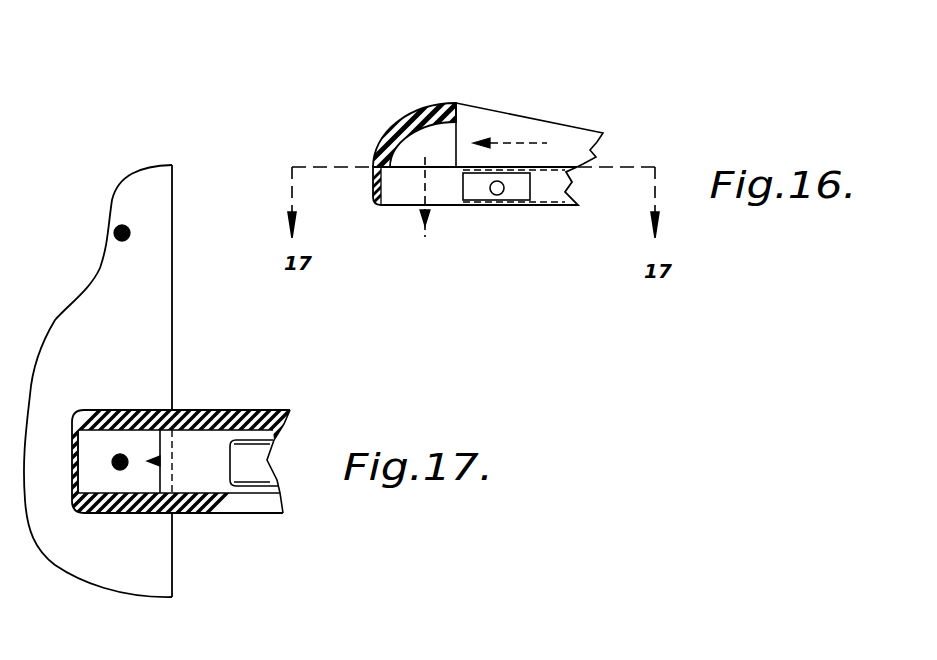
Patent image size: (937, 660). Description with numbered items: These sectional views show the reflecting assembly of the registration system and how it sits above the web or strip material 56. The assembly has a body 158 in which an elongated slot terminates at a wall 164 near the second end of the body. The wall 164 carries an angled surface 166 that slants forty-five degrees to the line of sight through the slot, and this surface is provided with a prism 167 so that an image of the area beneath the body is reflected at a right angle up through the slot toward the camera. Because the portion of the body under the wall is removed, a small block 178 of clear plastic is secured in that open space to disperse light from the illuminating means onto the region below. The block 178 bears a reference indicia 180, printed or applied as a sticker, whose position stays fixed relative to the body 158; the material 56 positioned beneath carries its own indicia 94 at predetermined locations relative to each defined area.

In FIG. 17, the web or strip material 56 is at (160, 285).
In FIG. 17, the indicia 94 is at (115, 228).
In FIG. 17, the body 158 is at (290, 410).
In FIG. 16, the wall 164 is at (392, 129).
In FIG. 16, the angled surface 166 is at (455, 118).
In FIG. 16, the prism 167 is at (448, 138).
In FIG. 16, the block of clear plastic material 178 is at (443, 200).
In FIG. 17, the block of clear plastic material 178 is at (95, 487).
In FIG. 17, the reference indicia 180 is at (160, 450).